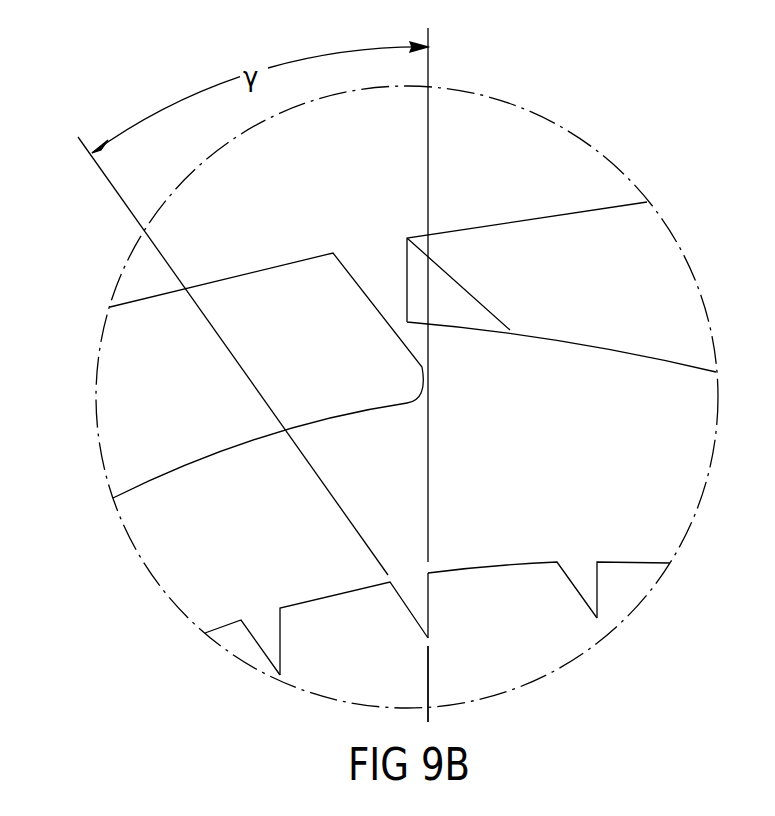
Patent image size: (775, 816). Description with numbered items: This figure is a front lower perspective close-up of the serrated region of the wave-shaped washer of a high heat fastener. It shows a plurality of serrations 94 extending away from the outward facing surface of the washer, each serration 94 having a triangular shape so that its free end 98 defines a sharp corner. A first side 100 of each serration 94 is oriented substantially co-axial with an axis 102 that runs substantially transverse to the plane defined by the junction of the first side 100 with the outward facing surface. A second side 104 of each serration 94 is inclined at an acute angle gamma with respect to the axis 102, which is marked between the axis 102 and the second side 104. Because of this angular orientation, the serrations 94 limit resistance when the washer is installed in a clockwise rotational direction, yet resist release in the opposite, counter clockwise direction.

The serrations 94 is at (580, 575).
The free end 98 is at (596, 619).
The first side 100 is at (260, 645).
The axis 102 is at (429, 682).
The second side 104 is at (280, 640).